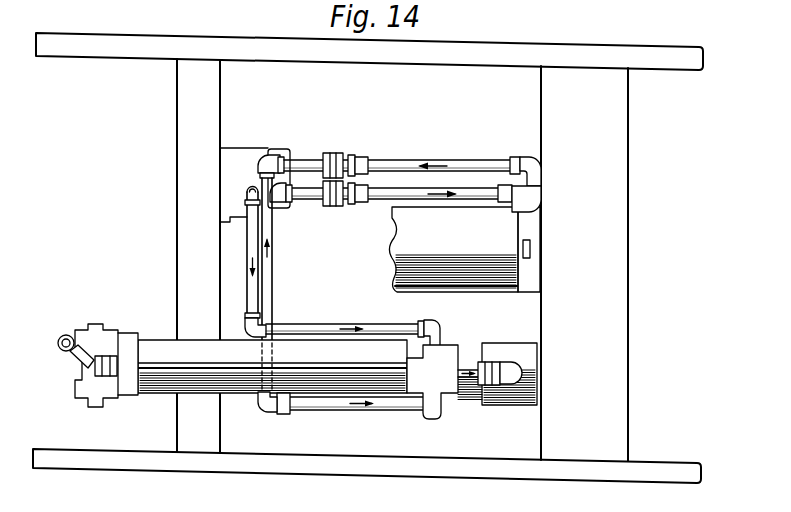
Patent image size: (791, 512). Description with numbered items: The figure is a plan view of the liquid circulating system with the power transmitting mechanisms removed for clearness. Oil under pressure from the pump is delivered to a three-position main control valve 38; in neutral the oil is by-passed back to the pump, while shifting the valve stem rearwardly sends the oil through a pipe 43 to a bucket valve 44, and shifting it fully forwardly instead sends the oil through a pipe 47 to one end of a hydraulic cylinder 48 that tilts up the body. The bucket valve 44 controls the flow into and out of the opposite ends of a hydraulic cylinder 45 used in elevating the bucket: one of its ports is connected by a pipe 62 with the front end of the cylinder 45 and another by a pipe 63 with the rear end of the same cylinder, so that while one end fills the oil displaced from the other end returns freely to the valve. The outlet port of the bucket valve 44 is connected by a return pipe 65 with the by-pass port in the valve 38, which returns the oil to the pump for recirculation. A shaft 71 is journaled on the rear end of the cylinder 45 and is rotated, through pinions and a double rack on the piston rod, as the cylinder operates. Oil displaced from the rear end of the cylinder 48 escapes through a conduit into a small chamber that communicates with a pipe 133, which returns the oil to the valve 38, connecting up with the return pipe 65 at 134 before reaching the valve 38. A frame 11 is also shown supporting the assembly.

The frame 11 is at (598, 478).
The main control valve 38 is at (240, 157).
The pipe 43 is at (368, 330).
The bucket valve 44 is at (448, 347).
The hydraulic cylinder 45 is at (307, 350).
The pipe 47 is at (472, 192).
The hydraulic cylinder 48 is at (407, 243).
The pipe 62 is at (530, 372).
The pipe 63 is at (148, 362).
The pipe 65 is at (328, 400).
The shaft 71 is at (97, 325).
The pipe 133 is at (393, 160).
The junction 134 is at (267, 154).